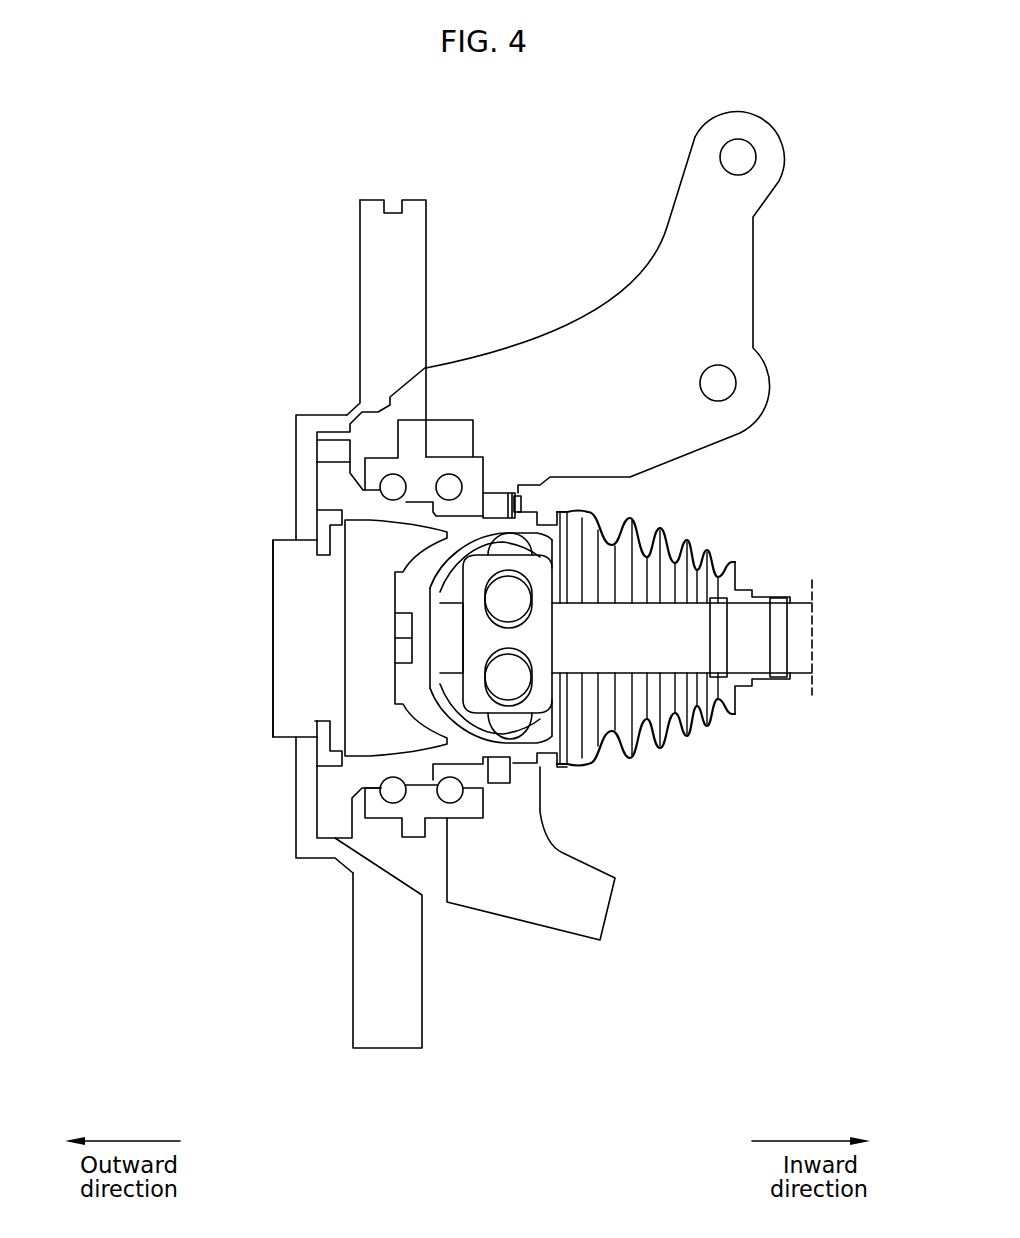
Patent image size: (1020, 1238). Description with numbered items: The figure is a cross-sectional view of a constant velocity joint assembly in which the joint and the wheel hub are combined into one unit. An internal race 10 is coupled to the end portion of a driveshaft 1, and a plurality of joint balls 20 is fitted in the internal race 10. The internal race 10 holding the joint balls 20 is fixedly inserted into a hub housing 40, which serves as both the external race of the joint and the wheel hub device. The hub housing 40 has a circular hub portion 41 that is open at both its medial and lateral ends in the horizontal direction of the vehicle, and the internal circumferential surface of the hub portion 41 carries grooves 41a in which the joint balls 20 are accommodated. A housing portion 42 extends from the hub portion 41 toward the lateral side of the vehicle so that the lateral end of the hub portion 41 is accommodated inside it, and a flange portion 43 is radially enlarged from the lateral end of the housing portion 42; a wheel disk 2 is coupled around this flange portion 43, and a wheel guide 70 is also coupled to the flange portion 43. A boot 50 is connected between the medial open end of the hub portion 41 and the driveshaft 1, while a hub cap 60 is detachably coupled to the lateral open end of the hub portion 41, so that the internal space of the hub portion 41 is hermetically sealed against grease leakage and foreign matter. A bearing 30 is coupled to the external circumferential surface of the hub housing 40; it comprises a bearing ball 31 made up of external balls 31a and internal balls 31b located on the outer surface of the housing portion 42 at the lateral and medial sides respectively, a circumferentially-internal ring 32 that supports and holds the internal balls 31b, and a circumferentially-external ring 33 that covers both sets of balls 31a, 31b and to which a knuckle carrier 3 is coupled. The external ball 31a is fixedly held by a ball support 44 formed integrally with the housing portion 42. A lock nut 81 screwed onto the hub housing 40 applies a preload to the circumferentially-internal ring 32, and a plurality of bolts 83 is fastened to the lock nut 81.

The driveshaft 1 is at (797, 633).
The wheel disk 2 is at (375, 1013).
The knuckle carrier 3 is at (693, 198).
The internal race 10 is at (478, 680).
The joint balls 20 is at (508, 598).
The bearing 30 is at (460, 830).
The bearing ball 31 is at (201, 363).
The external balls 31a is at (393, 487).
The internal balls 31b is at (449, 487).
The circumferentially-internal ring 32 is at (472, 505).
The circumferentially-external ring 33 is at (410, 825).
The hub housing 40 is at (305, 808).
The hub portion 41 is at (499, 750).
The grooves 41a is at (571, 745).
The housing portion 42 is at (395, 762).
The flange portion 43 is at (330, 825).
The ball support 44 is at (380, 498).
The boot 50 is at (713, 717).
The hub cap 60 is at (403, 628).
The wheel guide 70 is at (287, 660).
The lock nut 81 is at (497, 505).
The bolts 83 is at (525, 499).